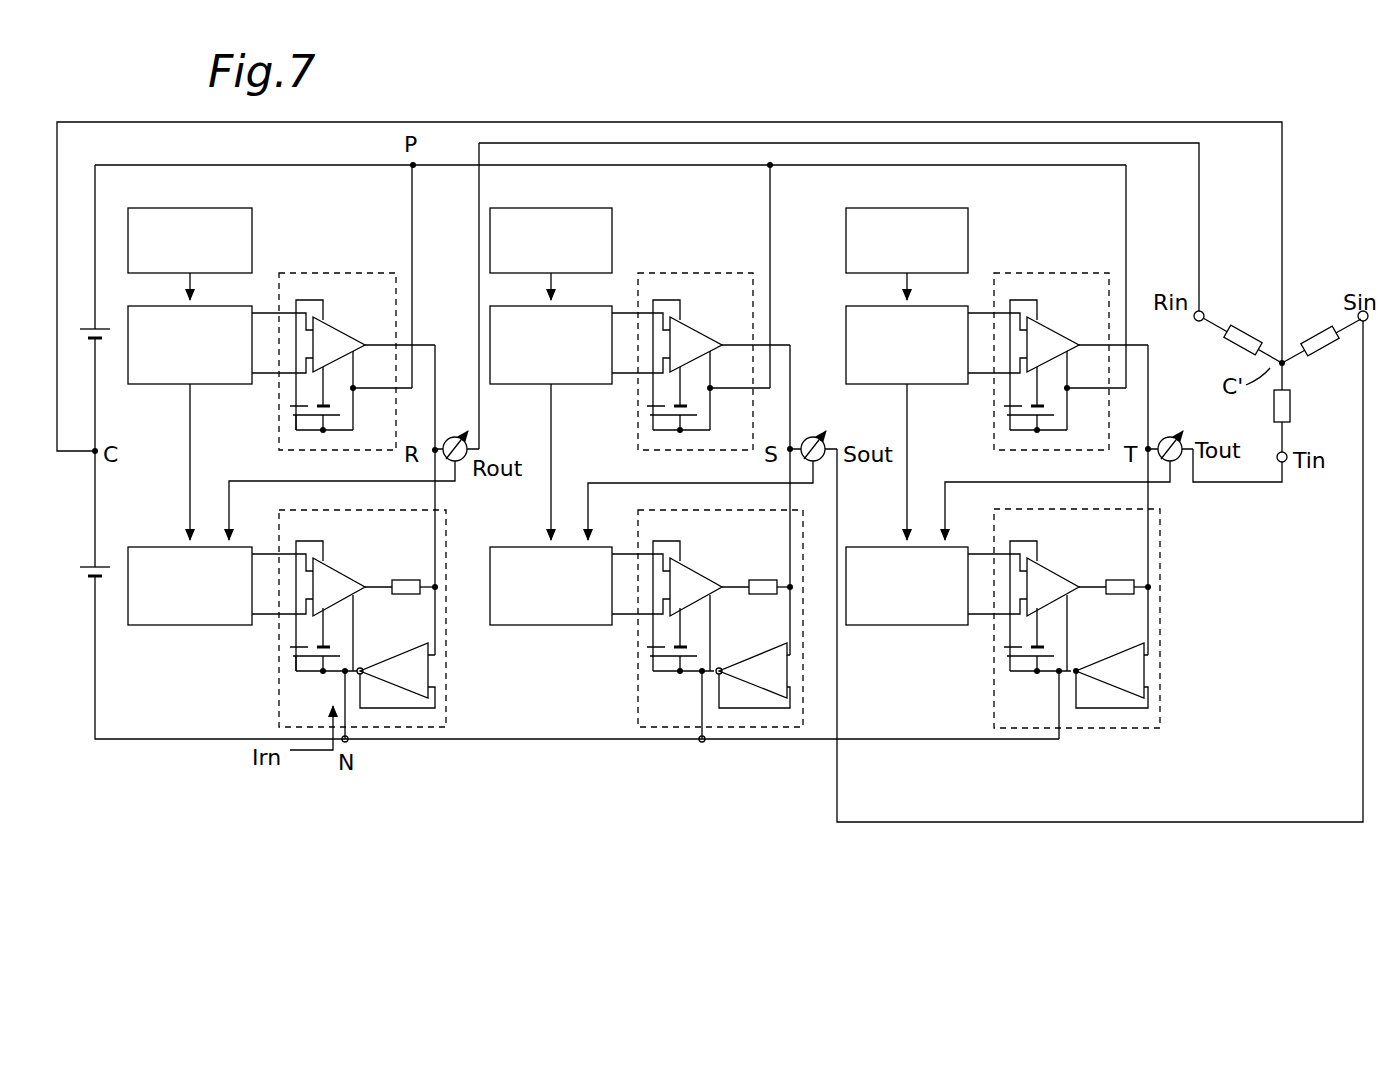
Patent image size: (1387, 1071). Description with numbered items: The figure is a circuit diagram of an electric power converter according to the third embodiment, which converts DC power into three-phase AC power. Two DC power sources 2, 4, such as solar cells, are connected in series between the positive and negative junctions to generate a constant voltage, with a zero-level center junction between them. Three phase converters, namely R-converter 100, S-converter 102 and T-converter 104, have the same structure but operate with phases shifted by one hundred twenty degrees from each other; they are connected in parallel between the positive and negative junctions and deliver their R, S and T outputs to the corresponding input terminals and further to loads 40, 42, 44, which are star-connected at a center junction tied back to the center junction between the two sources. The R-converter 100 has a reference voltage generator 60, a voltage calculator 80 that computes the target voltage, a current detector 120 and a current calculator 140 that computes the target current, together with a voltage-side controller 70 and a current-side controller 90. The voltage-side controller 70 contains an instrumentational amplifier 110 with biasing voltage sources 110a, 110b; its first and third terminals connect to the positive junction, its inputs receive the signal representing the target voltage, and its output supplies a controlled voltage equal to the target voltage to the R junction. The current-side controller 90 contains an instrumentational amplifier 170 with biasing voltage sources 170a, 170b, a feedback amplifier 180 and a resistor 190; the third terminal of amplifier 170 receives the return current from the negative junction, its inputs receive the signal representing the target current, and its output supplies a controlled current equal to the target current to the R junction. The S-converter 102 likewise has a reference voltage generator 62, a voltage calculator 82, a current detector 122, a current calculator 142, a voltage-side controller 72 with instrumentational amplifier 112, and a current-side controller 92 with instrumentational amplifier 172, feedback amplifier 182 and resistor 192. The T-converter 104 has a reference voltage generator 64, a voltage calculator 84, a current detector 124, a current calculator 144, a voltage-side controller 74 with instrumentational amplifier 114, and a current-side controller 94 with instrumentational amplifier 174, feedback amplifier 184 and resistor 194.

The DC power source 2 is at (87, 327).
The DC power source 4 is at (87, 565).
The load 40 is at (1246, 335).
The load 42 is at (1306, 335).
The load 44 is at (1292, 409).
The reference voltage generator 60 is at (182, 208).
The reference voltage generator 62 is at (544, 208).
The reference voltage generator 64 is at (900, 208).
The voltage-side controller 70 is at (332, 273).
The voltage-side controller 72 is at (690, 273).
The voltage-side controller 74 is at (1045, 273).
The voltage calculator 80 is at (157, 385).
The voltage calculator 82 is at (519, 385).
The voltage calculator 84 is at (945, 385).
The current-side controller 90 is at (432, 728).
The current-side controller 92 is at (745, 728).
The current-side controller 94 is at (1100, 728).
The R-converter 100 is at (295, 188).
The S-converter 102 is at (631, 188).
The T-converter 104 is at (988, 188).
The instrumentational amplifier 110 is at (335, 332).
The biasing voltage source 110a is at (282, 409).
The biasing voltage source 110b is at (302, 432).
The instrumentational amplifier 112 is at (692, 332).
The instrumentational amplifier 114 is at (1049, 332).
The current detector 120 is at (488, 460).
The current detector 122 is at (812, 440).
The current detector 124 is at (1168, 442).
The current calculator 140 is at (157, 626).
The current calculator 142 is at (519, 626).
The current calculator 144 is at (905, 626).
The instrumentational amplifier 170 is at (335, 574).
The biasing voltage source 170a is at (281, 659).
The biasing voltage source 170b is at (291, 674).
The instrumentational amplifier 172 is at (692, 574).
The instrumentational amplifier 174 is at (1049, 574).
The feedback amplifier 180 is at (387, 660).
The feedback amplifier 182 is at (744, 660).
The feedback amplifier 184 is at (1098, 660).
The resistor 190 is at (402, 574).
The resistor 192 is at (759, 574).
The resistor 194 is at (1116, 574).